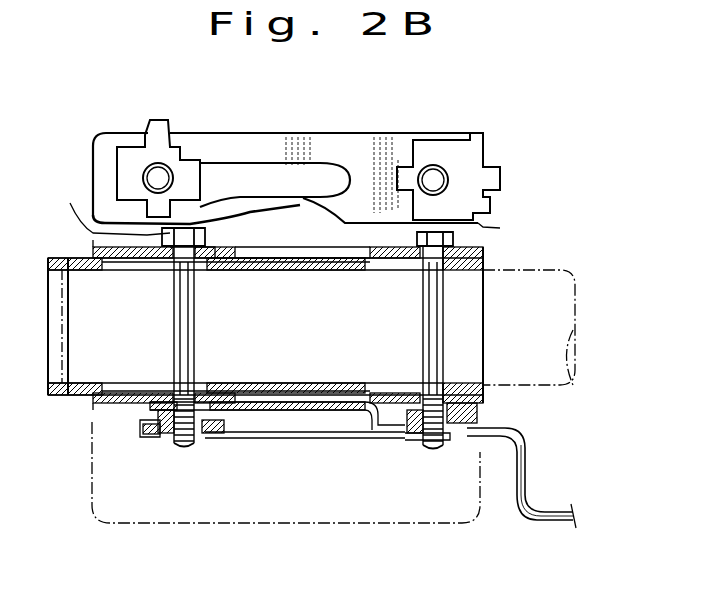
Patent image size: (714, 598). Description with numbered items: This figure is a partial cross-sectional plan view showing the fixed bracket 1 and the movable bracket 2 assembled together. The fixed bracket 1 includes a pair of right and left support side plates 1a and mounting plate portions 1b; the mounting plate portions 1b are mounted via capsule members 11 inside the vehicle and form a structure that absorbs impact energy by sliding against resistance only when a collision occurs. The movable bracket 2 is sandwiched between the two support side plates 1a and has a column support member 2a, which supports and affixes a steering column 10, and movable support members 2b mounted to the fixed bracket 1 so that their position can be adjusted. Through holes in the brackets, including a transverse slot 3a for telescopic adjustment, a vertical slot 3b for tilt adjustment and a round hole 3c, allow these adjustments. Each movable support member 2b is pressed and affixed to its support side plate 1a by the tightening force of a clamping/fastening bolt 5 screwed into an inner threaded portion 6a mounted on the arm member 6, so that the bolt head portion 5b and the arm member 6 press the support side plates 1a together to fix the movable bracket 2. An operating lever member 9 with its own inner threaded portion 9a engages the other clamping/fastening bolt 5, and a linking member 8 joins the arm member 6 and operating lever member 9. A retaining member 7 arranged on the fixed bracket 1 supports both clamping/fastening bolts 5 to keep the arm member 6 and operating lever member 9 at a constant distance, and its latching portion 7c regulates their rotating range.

The fixed bracket 1 is at (90, 152).
The support side plate 1a is at (97, 247).
The mounting plate portion 1b is at (365, 148).
The movable bracket 2 is at (487, 343).
The column support member 2a is at (473, 295).
The movable support member 2b is at (280, 270).
The transverse slot 3a is at (128, 263).
The vertical slot 3b is at (467, 417).
The round hole 3c is at (207, 253).
The clamping/fastening bolt 5 is at (187, 330).
The bolt head portion 5b is at (508, 225).
The arm member 6 is at (137, 430).
The inner threaded portion 6a is at (160, 432).
The retaining member 7 is at (333, 413).
The latching portion 7c is at (370, 427).
The linking member 8 is at (290, 440).
The operating lever member 9 is at (527, 473).
The inner threaded portion 9a is at (450, 440).
The steering column 10 is at (545, 262).
The capsule member 11 is at (133, 150).